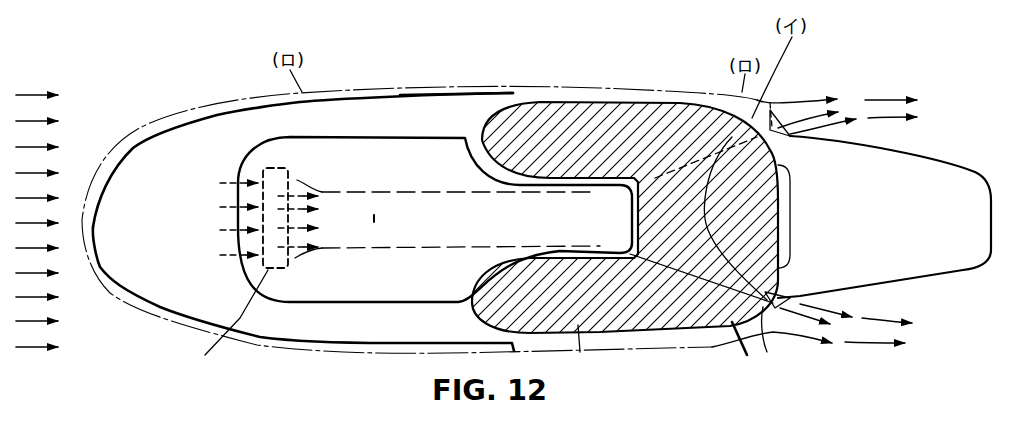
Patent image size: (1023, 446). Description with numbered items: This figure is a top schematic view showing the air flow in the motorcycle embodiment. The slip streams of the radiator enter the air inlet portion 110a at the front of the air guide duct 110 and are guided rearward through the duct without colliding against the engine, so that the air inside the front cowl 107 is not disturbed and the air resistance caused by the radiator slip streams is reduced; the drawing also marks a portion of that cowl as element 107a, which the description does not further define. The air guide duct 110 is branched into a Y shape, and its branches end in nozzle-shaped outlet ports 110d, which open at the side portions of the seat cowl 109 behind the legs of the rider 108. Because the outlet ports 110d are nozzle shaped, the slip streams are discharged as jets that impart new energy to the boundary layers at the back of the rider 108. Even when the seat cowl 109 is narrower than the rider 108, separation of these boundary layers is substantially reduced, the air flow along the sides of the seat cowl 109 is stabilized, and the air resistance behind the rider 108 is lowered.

The front cowl 107 is at (157, 305).
The inner hull wall 107a is at (512, 92).
The rider 108 is at (678, 103).
The seat cowl 109 is at (960, 170).
The air guide duct 110 is at (390, 192).
The air inlet portion 110a is at (297, 257).
The outlet ports 110d is at (768, 118).